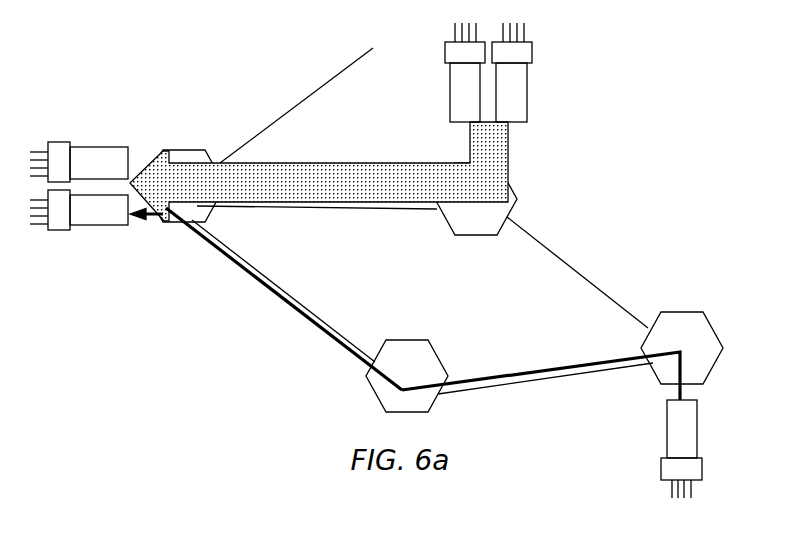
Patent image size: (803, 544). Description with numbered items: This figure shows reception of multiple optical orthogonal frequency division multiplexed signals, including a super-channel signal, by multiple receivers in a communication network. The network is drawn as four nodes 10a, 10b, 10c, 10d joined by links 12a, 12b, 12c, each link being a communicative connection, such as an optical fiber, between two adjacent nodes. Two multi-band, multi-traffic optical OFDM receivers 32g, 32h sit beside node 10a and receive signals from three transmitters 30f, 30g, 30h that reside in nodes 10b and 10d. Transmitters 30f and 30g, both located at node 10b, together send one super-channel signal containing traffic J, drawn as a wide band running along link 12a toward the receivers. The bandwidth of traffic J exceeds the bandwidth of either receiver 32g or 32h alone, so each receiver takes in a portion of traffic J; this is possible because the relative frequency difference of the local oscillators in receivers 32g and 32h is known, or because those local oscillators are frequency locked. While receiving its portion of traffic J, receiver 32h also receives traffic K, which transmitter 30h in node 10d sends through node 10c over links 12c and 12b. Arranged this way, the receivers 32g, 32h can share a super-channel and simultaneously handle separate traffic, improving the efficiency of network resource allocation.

The node 10a is at (186, 150).
The node 10b is at (480, 238).
The node 10c is at (375, 395).
The node 10d is at (680, 312).
The link 12a is at (340, 211).
The link 12b is at (245, 257).
The link 12c is at (545, 383).
The transmitter 30f is at (450, 92).
The transmitter 30g is at (528, 91).
The transmitter 30h is at (698, 428).
The multi-band, multi-traffic optical OFDM receiver 32g is at (93, 146).
The multi-band, multi-traffic optical OFDM receiver 32h is at (92, 226).
The traffic J is at (319, 171).
The traffic K is at (541, 375).